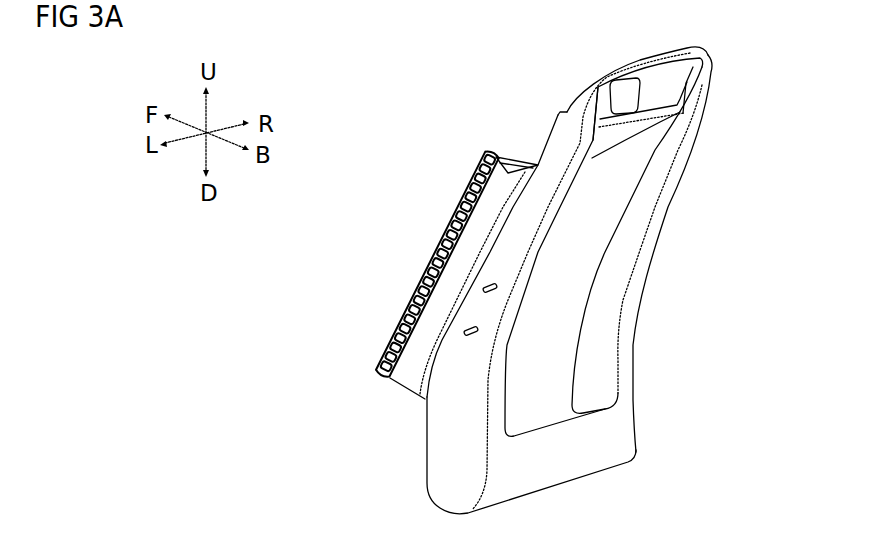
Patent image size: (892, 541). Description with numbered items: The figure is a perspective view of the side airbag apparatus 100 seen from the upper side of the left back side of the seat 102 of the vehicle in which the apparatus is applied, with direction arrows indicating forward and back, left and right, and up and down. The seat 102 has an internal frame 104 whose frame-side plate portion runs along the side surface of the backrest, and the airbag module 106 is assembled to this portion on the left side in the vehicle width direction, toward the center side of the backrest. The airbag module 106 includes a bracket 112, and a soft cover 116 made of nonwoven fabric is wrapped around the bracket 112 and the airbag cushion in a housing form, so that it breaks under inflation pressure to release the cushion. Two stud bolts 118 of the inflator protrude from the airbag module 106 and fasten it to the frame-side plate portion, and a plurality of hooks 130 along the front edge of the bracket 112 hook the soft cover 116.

The side airbag apparatus 100 is at (417, 99).
The seat 102 is at (709, 60).
The internal frame 104 is at (704, 113).
The airbag module 106 is at (442, 243).
The bracket 112 is at (507, 170).
The soft cover 116 is at (462, 204).
The stud bolt 118 is at (497, 287).
The hooks 130 is at (531, 469).